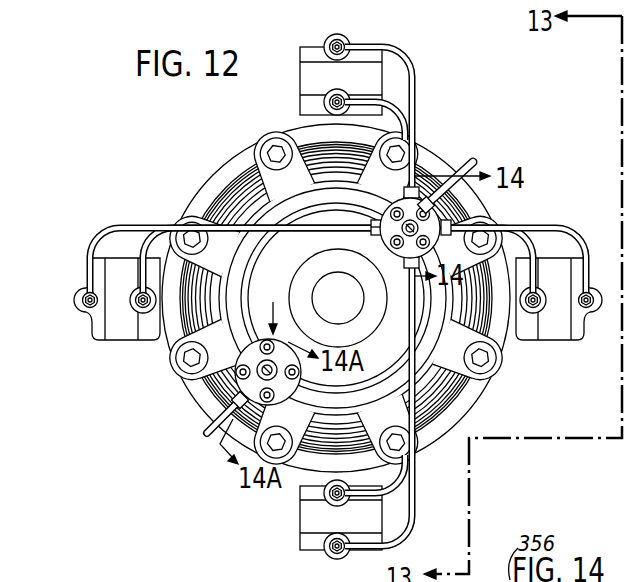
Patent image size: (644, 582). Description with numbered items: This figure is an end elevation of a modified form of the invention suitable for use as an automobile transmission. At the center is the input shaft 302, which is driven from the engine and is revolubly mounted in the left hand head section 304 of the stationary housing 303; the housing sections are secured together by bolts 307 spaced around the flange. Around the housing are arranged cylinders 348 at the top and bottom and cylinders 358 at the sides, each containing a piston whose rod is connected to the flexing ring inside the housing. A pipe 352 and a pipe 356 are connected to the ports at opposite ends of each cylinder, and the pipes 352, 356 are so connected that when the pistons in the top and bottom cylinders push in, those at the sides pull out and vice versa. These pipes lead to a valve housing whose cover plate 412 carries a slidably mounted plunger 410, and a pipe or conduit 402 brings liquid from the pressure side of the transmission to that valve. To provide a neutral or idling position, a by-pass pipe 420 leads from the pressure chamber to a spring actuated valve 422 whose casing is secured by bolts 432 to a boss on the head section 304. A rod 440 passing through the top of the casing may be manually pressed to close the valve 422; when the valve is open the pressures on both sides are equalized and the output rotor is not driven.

The input shaft 302 is at (339, 298).
The stationary housing 303 is at (220, 158).
The left hand head section 304 is at (435, 160).
The bolts 307 is at (279, 152).
The cylinders 348 is at (343, 40).
The pipe 352 is at (404, 66).
The pipe 356 is at (390, 106).
The cylinders 358 is at (100, 329).
The pipe or conduit 402 is at (472, 165).
The plunger 410 is at (385, 213).
The cover plate 412 is at (378, 232).
The by-pass pipe 420 is at (210, 440).
The spring actuated valve 422 is at (273, 306).
The bolts 432 is at (240, 378).
The rod 440 is at (300, 374).